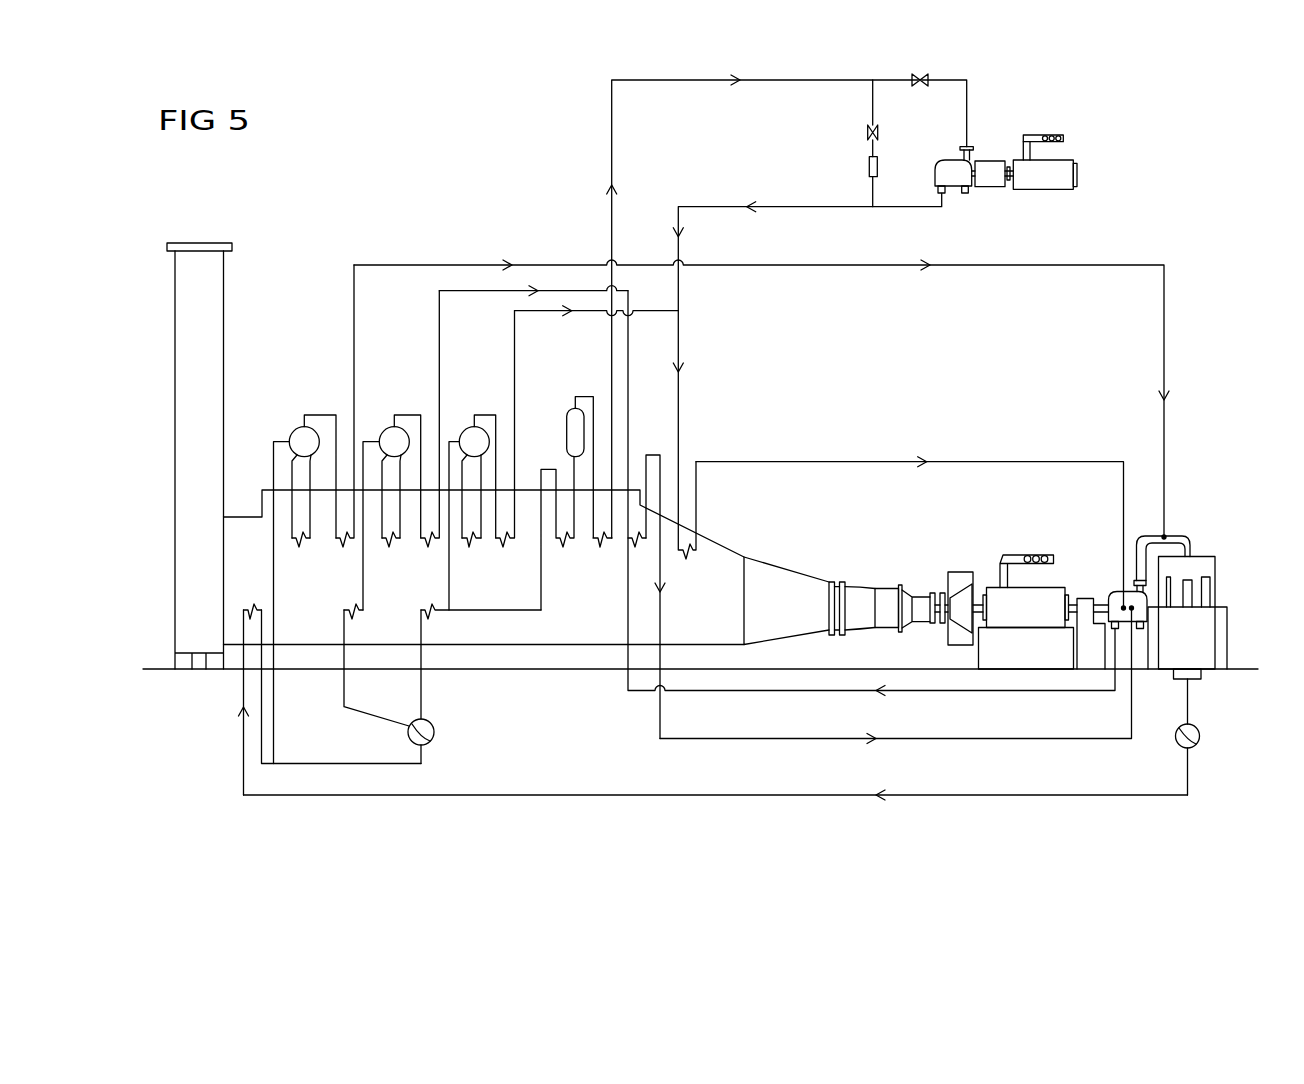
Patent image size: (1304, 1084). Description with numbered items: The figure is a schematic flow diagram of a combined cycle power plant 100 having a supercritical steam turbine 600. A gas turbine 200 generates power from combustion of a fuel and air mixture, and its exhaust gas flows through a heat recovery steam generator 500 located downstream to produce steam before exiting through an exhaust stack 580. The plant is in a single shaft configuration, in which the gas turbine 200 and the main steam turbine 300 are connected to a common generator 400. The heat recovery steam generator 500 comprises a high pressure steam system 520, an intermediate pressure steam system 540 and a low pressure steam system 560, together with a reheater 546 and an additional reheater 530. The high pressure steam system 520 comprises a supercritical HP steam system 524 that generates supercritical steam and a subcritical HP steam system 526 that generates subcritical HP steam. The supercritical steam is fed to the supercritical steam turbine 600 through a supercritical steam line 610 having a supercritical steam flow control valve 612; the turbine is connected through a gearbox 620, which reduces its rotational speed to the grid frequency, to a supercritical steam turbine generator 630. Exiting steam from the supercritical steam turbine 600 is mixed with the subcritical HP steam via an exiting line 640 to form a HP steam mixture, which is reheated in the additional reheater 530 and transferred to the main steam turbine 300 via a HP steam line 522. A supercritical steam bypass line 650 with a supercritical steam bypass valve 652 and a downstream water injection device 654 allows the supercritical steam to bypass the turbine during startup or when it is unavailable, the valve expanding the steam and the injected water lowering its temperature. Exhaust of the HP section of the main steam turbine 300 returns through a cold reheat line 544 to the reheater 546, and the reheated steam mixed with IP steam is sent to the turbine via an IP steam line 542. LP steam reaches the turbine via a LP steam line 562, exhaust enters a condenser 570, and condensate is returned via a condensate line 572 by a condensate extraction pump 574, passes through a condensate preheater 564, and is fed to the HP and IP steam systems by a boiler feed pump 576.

The combined cycle power plant 100 is at (1197, 90).
The gas turbine 200 is at (890, 585).
The main steam turbine 300 is at (1170, 534).
The common generator 400 is at (1058, 586).
The heat recovery steam generator 500 is at (345, 251).
The high pressure steam system 520 is at (541, 393).
The HP steam line 522 is at (832, 461).
The supercritical HP steam system 524 is at (584, 390).
The subcritical HP steam system 526 is at (474, 406).
The additional reheater 530 is at (696, 503).
The intermediate pressure steam system 540 is at (395, 406).
The IP steam line 542 is at (985, 740).
The cold reheat line 544 is at (985, 692).
The reheater 546 is at (652, 455).
The low pressure steam system 560 is at (297, 406).
The LP steam line 562 is at (1120, 264).
The condensate preheater 564 is at (250, 606).
The condenser 570 is at (1201, 640).
The condensate line 572 is at (985, 797).
The condensate extraction pump 574 is at (1200, 737).
The boiler feed pump 576 is at (434, 729).
The exhaust stack 580 is at (224, 296).
The supercritical steam turbine 600 is at (954, 178).
The supercritical steam line 610 is at (611, 134).
The supercritical steam flow control valve 612 is at (920, 73).
The gearbox 620 is at (990, 160).
The supercritical steam turbine generator 630 is at (1078, 172).
The exiting line 640 is at (714, 206).
The supercritical steam bypass line 650 is at (873, 108).
The supercritical steam bypass valve 652 is at (867, 132).
The water injection device 654 is at (869, 167).